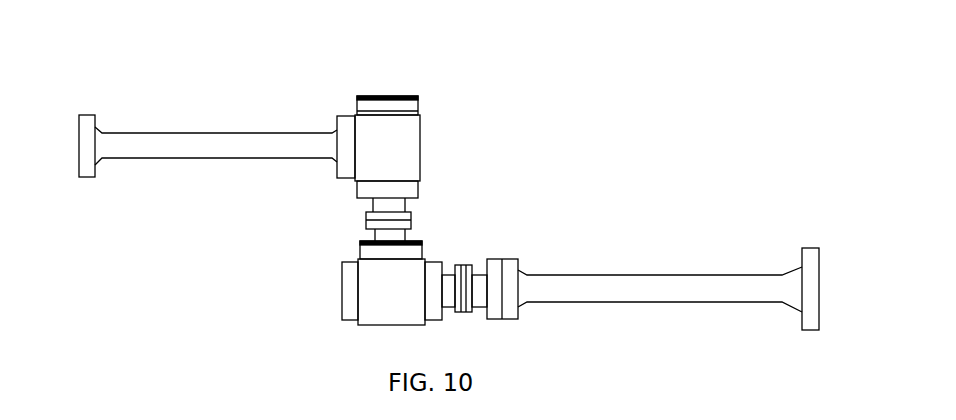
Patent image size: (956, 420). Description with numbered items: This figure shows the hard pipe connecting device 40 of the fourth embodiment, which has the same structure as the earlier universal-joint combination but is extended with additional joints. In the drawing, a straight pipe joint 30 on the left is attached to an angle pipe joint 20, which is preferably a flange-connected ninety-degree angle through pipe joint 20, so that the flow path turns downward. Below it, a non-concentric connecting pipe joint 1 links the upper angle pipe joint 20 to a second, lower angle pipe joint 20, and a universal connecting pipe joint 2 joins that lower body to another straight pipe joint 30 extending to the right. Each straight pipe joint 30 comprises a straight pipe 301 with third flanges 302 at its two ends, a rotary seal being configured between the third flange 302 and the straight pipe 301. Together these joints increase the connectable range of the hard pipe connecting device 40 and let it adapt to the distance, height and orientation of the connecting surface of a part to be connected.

The hard pipe connecting device 40 is at (515, 128).
The straight pipe joint 30 is at (162, 153).
The angle pipe joint 20 is at (411, 153).
The non-concentric connecting pipe joint 1 is at (397, 227).
The universal connecting pipe joint 2 is at (463, 287).
The third flange 302 is at (509, 290).
The straight pipe 301 is at (588, 290).